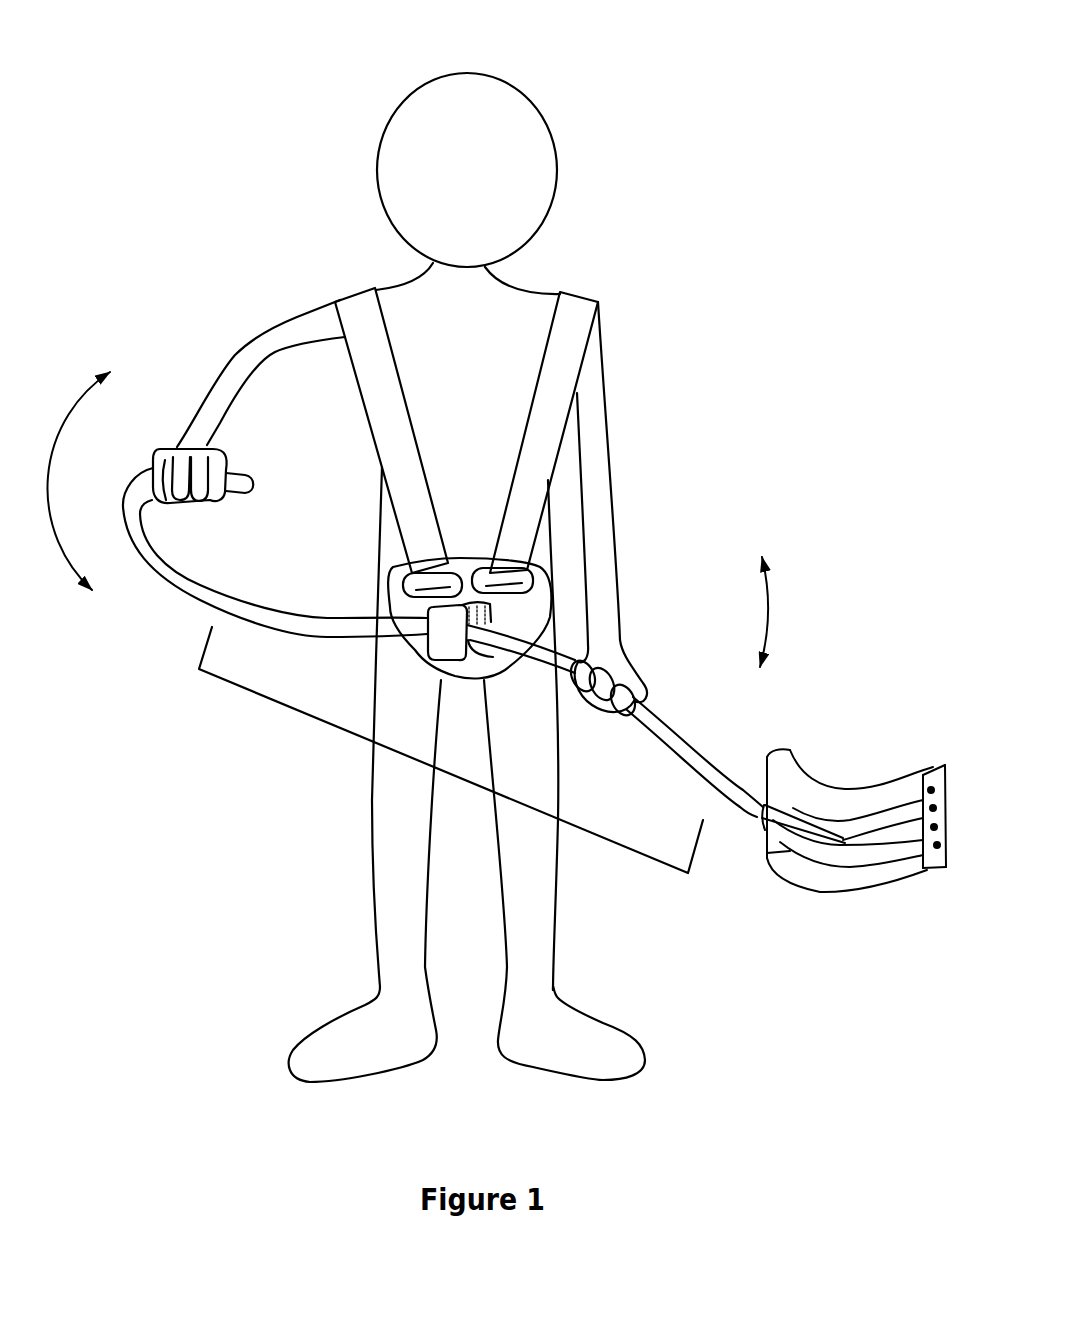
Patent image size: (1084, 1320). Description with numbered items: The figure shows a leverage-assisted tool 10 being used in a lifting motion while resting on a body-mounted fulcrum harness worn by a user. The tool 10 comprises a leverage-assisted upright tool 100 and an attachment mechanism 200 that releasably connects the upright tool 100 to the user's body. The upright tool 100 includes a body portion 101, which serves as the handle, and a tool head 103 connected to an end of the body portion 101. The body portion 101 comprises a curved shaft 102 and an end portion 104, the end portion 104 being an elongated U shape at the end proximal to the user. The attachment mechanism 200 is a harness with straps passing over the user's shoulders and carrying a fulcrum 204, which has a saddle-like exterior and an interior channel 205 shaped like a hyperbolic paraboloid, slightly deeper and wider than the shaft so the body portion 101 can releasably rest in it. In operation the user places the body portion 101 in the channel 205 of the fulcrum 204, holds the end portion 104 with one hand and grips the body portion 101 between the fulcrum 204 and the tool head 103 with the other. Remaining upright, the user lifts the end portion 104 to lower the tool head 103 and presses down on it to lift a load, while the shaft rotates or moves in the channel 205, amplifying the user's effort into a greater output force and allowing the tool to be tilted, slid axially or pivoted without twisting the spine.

The leverage-assisted tool 10 is at (280, 123).
The leverage-assisted upright tool 100 is at (177, 625).
The body portion 101 is at (283, 617).
The curved shaft 102 is at (451, 750).
The tool head 103 is at (850, 790).
The end portion 104 is at (140, 490).
The attachment mechanism 200 is at (578, 318).
The fulcrum 204 is at (448, 633).
The channel 205 is at (478, 652).